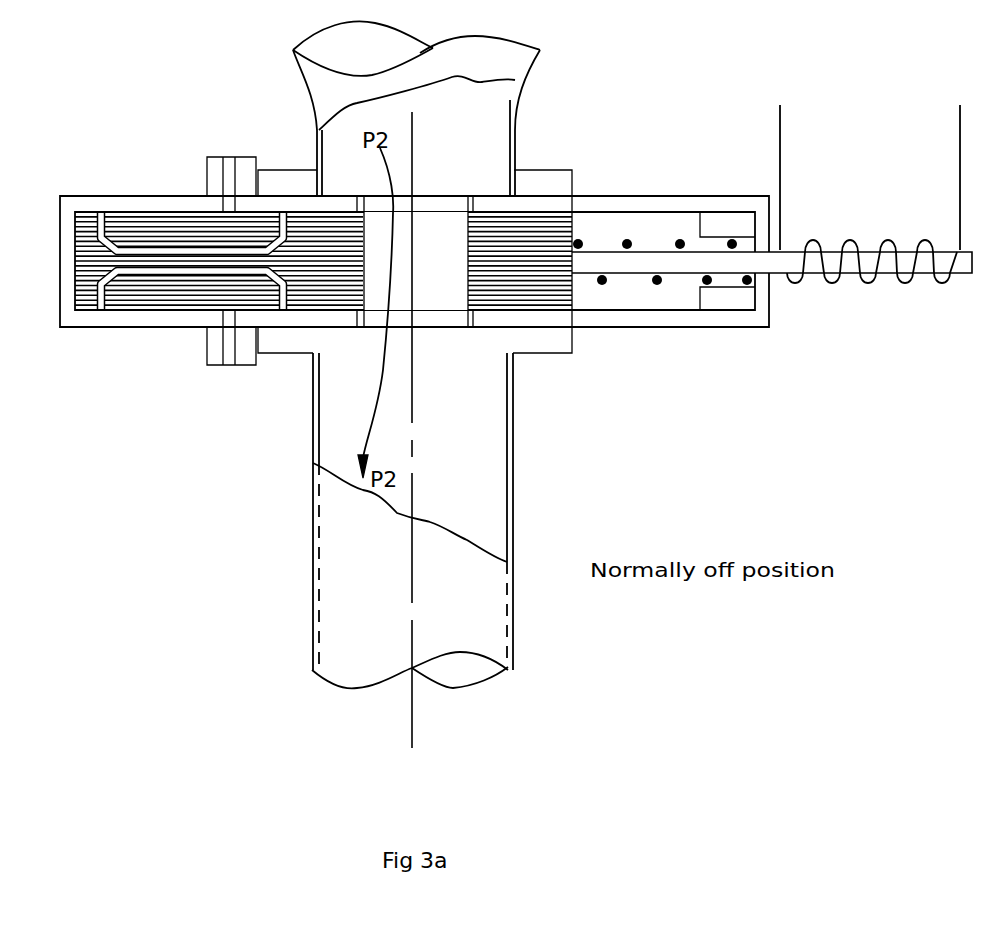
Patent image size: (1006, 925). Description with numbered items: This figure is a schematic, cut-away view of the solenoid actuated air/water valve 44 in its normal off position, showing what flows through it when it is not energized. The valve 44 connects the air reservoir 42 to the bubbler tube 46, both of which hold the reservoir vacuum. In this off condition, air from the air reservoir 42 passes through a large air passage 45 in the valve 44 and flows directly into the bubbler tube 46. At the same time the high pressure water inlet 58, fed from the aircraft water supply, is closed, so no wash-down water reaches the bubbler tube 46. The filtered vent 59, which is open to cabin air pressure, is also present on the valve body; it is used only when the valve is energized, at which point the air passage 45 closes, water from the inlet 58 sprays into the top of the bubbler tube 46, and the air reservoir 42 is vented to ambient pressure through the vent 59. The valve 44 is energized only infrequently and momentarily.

The air reservoir 42 is at (416, 108).
The solenoid actuated air/water valve 44 is at (690, 334).
The air passage 45 is at (416, 261).
The bubbler tube 46 is at (513, 468).
The high pressure water input line 58 is at (223, 396).
The filtered vent 59 is at (231, 152).